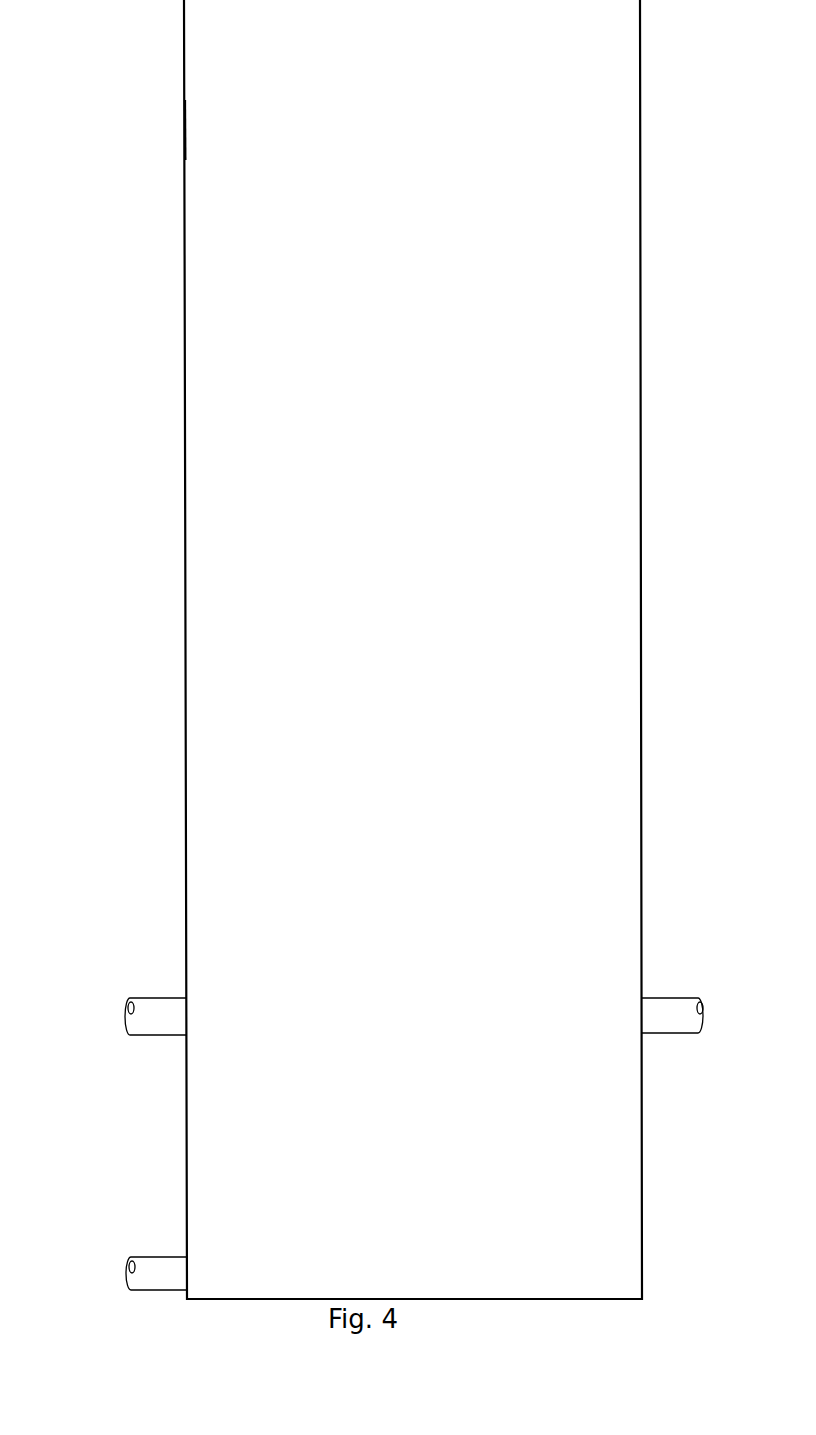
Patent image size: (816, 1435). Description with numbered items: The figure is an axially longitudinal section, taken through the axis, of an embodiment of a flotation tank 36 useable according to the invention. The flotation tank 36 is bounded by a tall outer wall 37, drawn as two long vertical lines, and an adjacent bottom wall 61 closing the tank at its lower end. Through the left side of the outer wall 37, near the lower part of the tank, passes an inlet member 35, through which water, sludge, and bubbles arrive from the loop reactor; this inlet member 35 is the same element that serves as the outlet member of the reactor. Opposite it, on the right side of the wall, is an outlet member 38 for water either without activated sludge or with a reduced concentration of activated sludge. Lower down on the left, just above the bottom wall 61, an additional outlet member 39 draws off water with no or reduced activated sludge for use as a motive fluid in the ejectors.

The inlet member 35 is at (150, 998).
The flotation tank 36 is at (172, 58).
The outer wall 37 is at (183, 131).
The outlet member 38 is at (675, 997).
The additional outlet member 39 is at (155, 1257).
The bottom wall 61 is at (247, 1300).